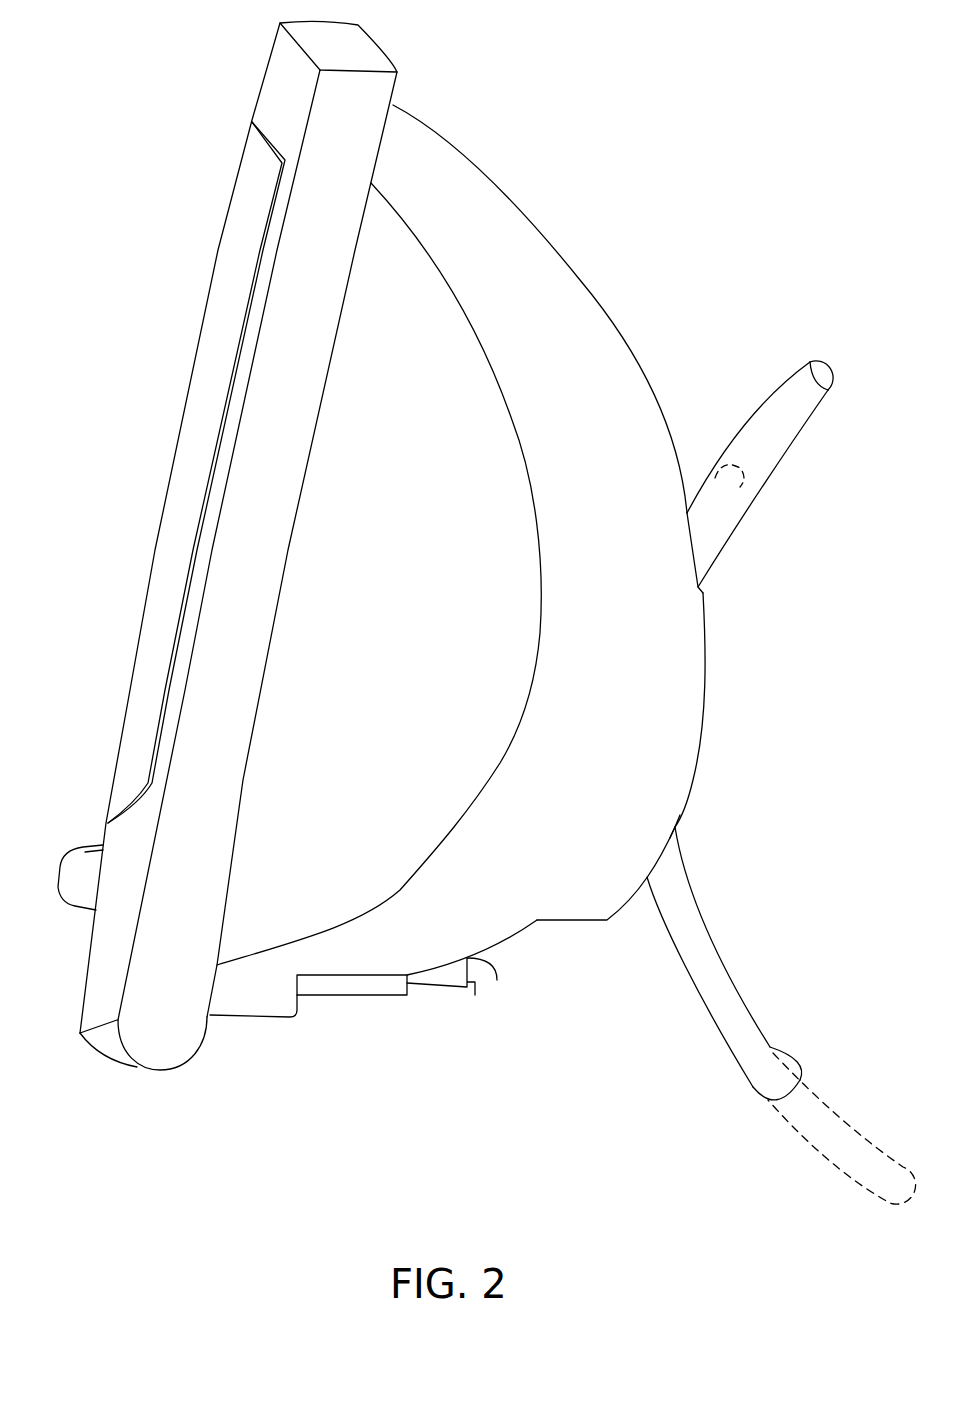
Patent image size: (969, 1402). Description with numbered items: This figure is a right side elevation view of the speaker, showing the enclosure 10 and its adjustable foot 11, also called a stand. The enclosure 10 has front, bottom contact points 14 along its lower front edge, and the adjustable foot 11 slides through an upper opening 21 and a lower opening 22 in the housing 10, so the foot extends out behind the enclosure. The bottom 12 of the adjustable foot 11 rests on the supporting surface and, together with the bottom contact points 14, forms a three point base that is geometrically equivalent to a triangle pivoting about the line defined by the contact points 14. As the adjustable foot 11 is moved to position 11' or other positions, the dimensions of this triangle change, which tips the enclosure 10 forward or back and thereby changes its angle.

The enclosure 10 is at (397, 90).
The bottom contact points 14 is at (137, 1070).
The upper opening 21 is at (698, 582).
The lower opening 22 is at (677, 830).
The adjustable foot 11 is at (723, 963).
The bottom of adjustable foot 12 is at (797, 1063).
The adjustable foot in alternate position 11' is at (801, 782).